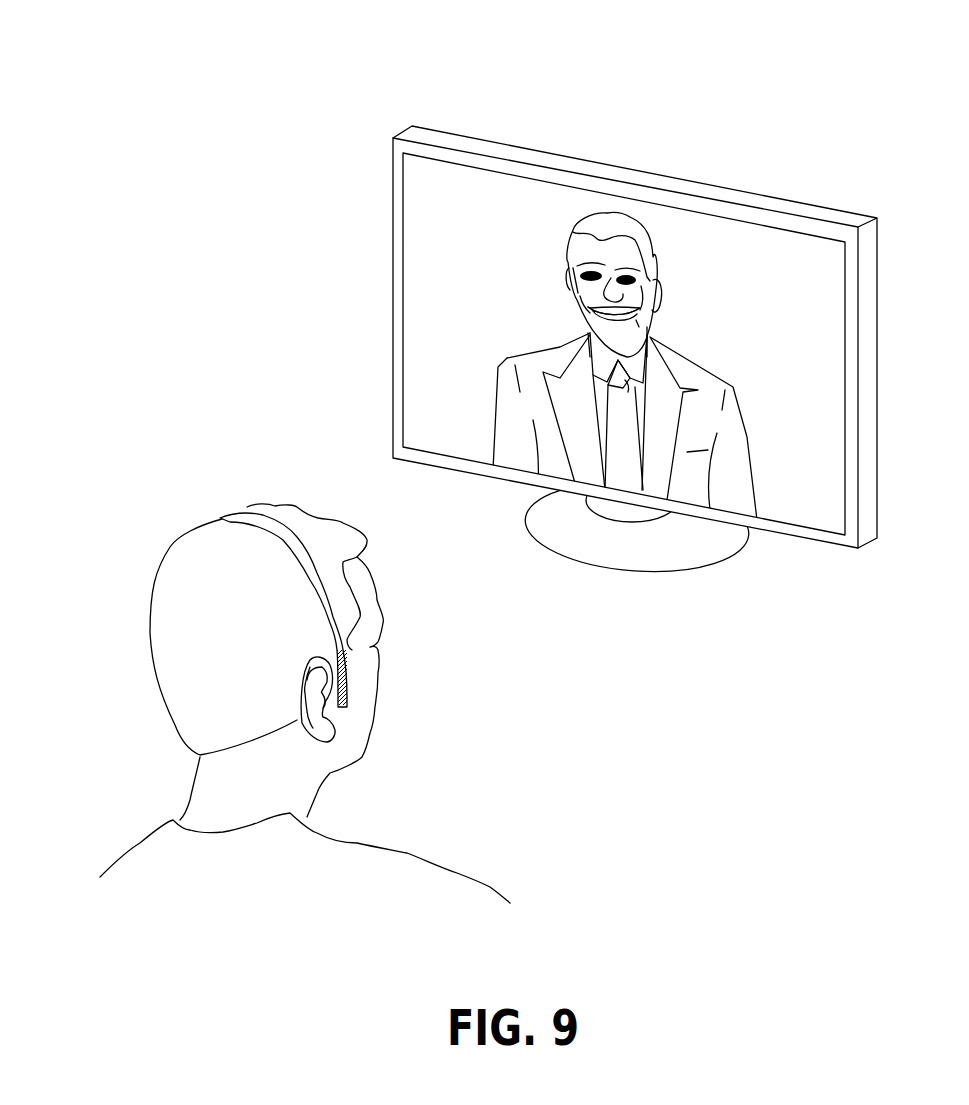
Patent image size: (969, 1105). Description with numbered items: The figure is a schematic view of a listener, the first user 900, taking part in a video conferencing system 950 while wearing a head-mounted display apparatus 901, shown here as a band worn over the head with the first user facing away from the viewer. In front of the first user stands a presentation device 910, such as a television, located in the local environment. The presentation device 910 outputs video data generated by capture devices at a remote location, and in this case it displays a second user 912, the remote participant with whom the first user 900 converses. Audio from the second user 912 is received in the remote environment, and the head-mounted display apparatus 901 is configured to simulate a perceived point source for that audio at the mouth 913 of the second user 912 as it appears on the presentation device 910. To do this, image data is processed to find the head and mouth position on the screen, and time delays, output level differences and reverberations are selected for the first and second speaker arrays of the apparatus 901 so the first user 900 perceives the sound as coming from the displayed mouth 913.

The video conferencing system 950 is at (237, 117).
The presentation device 910 is at (495, 146).
The second user 912 is at (658, 256).
The mouth 913 is at (634, 321).
The first user 900 is at (180, 633).
The head-mounted display apparatus 901 is at (202, 453).